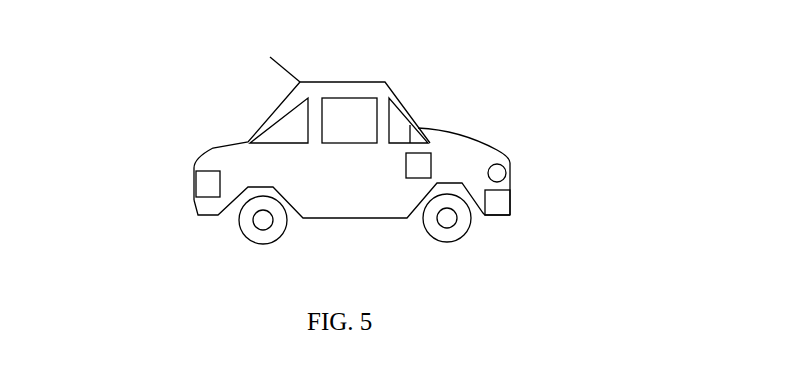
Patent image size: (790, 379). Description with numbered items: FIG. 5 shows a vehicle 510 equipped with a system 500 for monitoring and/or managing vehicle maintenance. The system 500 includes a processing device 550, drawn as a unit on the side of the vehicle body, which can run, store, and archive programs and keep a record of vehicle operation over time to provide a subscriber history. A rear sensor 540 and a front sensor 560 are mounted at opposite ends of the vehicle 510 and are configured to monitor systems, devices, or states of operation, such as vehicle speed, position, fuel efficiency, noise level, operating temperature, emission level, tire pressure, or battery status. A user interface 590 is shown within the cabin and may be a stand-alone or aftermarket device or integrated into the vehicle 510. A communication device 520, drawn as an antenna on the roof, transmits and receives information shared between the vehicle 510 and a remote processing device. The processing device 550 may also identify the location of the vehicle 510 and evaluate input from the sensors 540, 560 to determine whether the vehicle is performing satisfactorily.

The system 500 is at (534, 46).
The vehicle 510 is at (499, 143).
The communication device 520 is at (260, 70).
The rear sensor 540 is at (183, 192).
The processing device 550 is at (412, 183).
The front sensor 560 is at (517, 202).
The user interface 590 is at (414, 130).